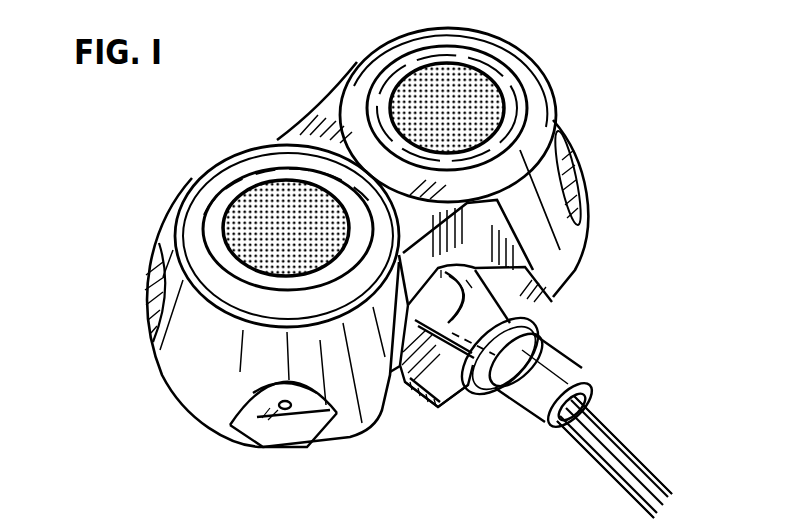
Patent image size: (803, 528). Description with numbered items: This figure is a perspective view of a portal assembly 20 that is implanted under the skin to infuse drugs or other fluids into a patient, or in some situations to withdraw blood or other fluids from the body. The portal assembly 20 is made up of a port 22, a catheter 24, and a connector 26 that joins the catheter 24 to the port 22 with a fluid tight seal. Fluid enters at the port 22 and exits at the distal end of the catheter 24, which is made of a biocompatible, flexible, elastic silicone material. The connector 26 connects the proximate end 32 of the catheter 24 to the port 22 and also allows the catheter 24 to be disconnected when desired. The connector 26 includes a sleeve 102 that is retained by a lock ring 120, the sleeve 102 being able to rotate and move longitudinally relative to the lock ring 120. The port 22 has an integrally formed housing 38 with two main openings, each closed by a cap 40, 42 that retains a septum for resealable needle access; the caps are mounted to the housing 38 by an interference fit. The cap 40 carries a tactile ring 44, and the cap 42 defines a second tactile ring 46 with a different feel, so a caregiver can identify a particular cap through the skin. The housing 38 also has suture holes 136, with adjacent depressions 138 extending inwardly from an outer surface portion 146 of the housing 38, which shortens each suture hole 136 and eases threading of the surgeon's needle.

The portal assembly 20 is at (95, 260).
The port 22 is at (561, 131).
The catheter 24 is at (607, 422).
The connector 26 is at (548, 323).
The proximate end 32 is at (603, 470).
The housing 38 is at (585, 237).
The cap 40 is at (192, 203).
The cap 42 is at (336, 108).
The tactile ring 44 is at (276, 142).
The second tactile ring 46 is at (380, 75).
The sleeve 102 is at (578, 362).
The lock ring 120 is at (442, 413).
The suture hole 136 is at (290, 412).
The depression 138 is at (256, 390).
The outer surface portion 146 is at (185, 350).